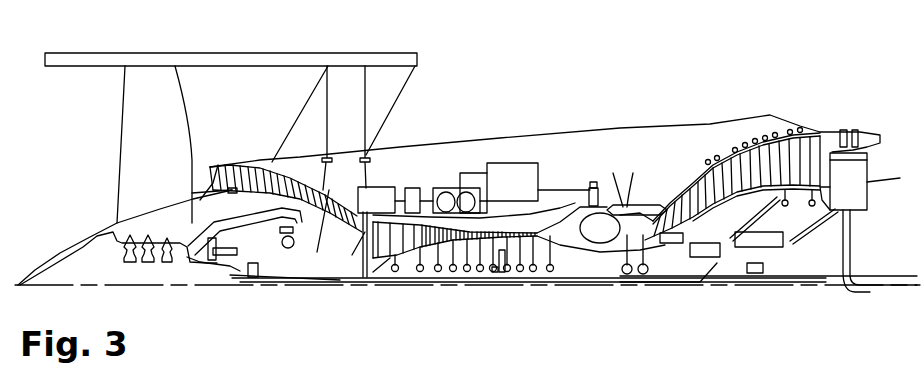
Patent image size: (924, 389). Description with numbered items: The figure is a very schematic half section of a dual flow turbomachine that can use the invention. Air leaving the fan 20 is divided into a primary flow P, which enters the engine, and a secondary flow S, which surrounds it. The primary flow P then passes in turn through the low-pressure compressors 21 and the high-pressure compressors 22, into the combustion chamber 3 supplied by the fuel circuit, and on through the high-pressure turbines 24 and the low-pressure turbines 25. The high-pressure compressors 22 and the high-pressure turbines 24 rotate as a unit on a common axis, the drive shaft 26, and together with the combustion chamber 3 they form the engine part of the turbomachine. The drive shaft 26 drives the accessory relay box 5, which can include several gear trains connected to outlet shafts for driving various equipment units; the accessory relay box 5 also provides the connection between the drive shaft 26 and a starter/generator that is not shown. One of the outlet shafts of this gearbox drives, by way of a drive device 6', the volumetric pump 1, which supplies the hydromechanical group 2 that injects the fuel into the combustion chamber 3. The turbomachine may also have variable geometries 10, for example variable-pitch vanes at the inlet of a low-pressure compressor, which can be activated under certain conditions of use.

The volumetric pump 1 is at (447, 187).
The hydromechanical group 2 is at (510, 183).
The combustion chamber 3 is at (596, 183).
The accessory relay box 5 is at (388, 187).
The drive device 6' is at (421, 152).
The variable geometries 10 is at (218, 163).
The fan 20 is at (145, 120).
The low-pressure compressors 21 is at (262, 163).
The high-pressure compressors 22 is at (447, 292).
The high-pressure turbines 24 is at (693, 192).
The low-pressure turbines 25 is at (743, 137).
The drive shaft 26 is at (369, 250).
The secondary flow S is at (265, 121).
The primary flow P is at (189, 172).